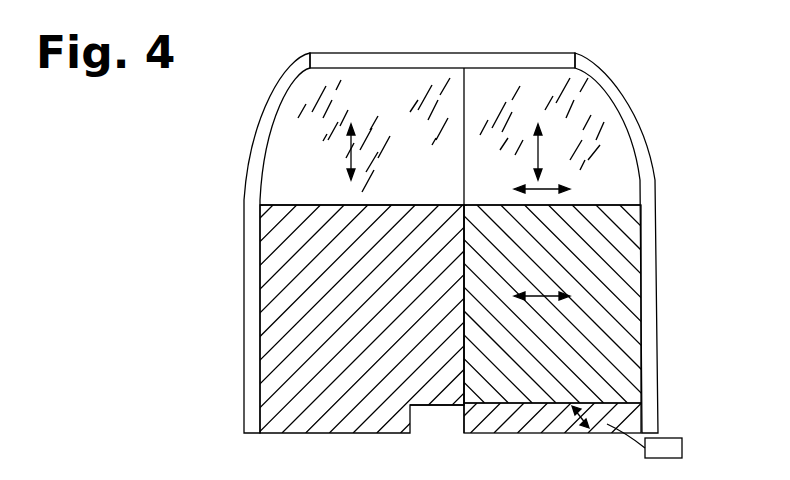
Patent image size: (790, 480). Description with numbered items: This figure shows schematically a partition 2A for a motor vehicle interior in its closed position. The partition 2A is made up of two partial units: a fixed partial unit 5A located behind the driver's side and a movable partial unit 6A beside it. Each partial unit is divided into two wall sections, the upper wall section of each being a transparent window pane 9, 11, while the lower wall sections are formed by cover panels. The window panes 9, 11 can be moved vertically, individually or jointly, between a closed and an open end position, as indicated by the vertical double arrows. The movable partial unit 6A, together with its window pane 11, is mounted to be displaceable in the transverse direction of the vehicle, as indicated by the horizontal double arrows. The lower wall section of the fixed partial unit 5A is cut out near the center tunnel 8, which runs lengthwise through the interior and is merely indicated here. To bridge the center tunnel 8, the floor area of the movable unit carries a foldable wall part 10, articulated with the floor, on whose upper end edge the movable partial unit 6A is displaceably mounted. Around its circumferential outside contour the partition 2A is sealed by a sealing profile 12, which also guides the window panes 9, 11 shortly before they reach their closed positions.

The partition 2A is at (433, 50).
The sealing profile 12 is at (267, 110).
The window pane 9 is at (313, 175).
The window pane 11 is at (577, 150).
The fixed partial unit 5A is at (283, 362).
The movable partial unit 6A is at (615, 296).
The center tunnel 8 is at (450, 420).
The foldable wall part 10 is at (607, 418).